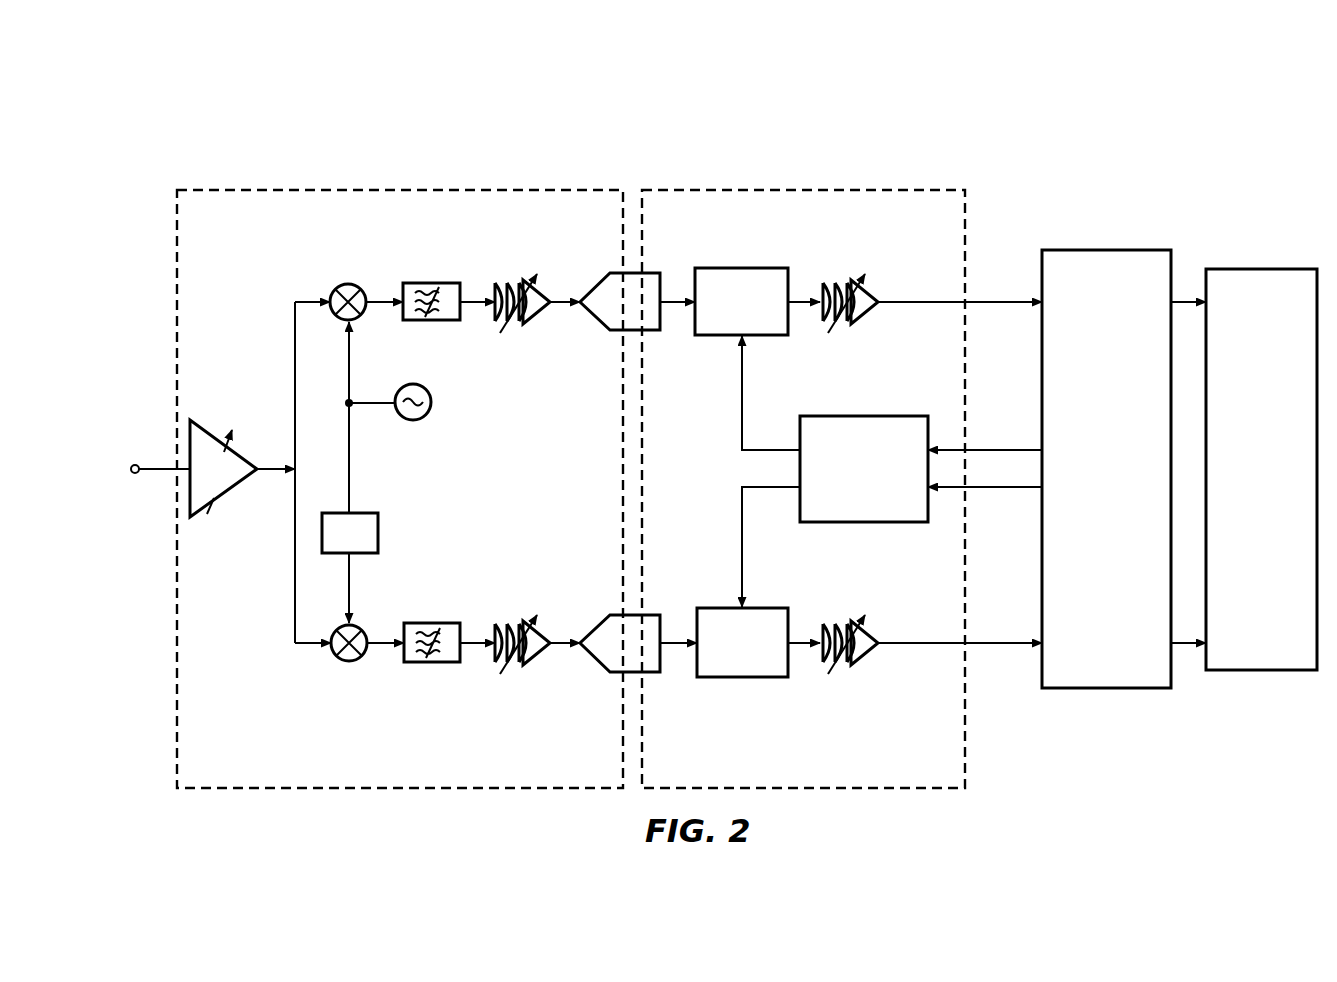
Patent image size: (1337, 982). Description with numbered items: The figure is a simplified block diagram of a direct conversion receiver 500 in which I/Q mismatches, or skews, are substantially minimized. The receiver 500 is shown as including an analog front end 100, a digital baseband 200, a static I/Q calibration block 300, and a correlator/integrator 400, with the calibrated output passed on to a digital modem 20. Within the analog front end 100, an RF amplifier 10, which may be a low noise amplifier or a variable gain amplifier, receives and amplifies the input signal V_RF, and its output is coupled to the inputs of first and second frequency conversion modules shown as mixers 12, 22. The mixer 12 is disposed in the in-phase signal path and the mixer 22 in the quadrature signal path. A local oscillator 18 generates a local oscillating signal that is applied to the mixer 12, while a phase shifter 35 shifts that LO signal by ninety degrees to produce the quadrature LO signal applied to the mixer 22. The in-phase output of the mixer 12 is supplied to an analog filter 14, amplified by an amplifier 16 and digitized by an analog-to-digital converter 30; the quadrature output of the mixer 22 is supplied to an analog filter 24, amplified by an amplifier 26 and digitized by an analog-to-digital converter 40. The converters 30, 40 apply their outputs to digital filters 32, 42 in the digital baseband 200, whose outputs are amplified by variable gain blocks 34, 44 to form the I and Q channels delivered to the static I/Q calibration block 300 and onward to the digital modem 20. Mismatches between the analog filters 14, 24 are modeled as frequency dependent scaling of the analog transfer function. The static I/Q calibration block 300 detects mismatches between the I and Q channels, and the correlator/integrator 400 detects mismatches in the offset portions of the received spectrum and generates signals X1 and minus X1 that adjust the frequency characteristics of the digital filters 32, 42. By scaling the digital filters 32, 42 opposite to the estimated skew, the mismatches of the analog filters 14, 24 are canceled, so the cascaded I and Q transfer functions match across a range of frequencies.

The direct conversion receiver 500 is at (260, 78).
The analog front end 100 is at (400, 190).
The digital baseband 200 is at (807, 190).
The static I/Q calibration block 300 is at (1106, 250).
The digital modem 20 is at (1262, 269).
The RF amplifier 10 is at (213, 425).
The mixer 12 is at (340, 322).
The analog filter 14 is at (432, 283).
The amplifier 16 is at (513, 283).
The local oscillator 18 is at (431, 402).
The phase shifter 35 is at (378, 535).
The mixer 22 is at (335, 655).
The analog filter 24 is at (432, 623).
The I variable gain amplifier 26 is at (515, 623).
The analog-to-digital converter 30 is at (600, 273).
The analog-to-digital converter 40 is at (600, 616).
The digital filter 32 is at (742, 268).
The variable gain block 34 is at (833, 282).
The digital filter 42 is at (740, 677).
The variable gain block 44 is at (835, 623).
The correlator/integrator 400 is at (862, 416).